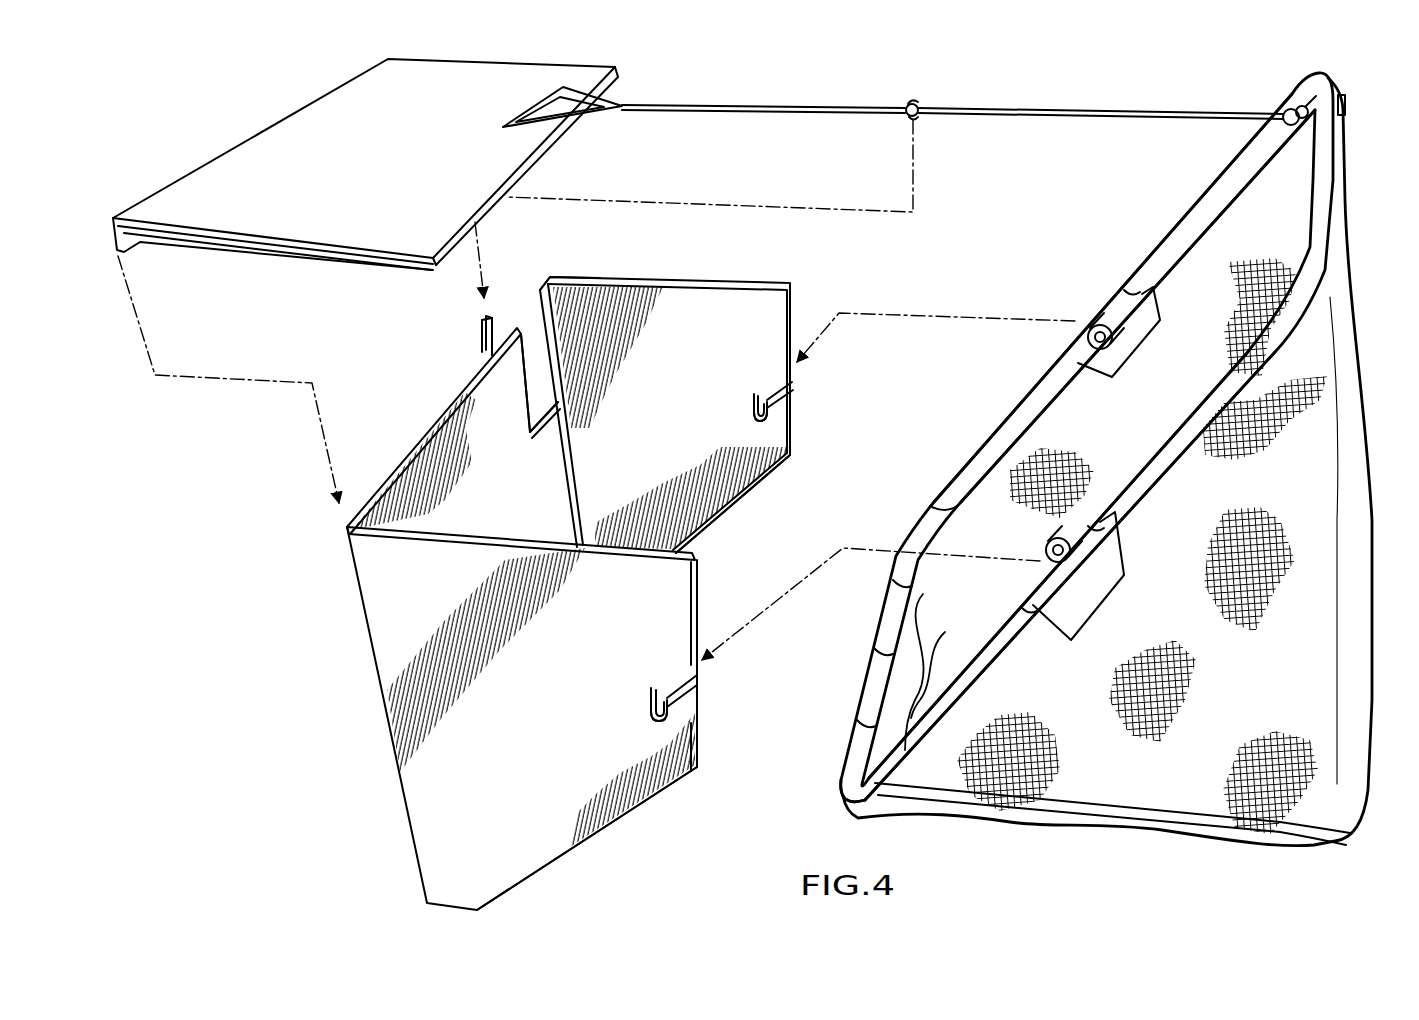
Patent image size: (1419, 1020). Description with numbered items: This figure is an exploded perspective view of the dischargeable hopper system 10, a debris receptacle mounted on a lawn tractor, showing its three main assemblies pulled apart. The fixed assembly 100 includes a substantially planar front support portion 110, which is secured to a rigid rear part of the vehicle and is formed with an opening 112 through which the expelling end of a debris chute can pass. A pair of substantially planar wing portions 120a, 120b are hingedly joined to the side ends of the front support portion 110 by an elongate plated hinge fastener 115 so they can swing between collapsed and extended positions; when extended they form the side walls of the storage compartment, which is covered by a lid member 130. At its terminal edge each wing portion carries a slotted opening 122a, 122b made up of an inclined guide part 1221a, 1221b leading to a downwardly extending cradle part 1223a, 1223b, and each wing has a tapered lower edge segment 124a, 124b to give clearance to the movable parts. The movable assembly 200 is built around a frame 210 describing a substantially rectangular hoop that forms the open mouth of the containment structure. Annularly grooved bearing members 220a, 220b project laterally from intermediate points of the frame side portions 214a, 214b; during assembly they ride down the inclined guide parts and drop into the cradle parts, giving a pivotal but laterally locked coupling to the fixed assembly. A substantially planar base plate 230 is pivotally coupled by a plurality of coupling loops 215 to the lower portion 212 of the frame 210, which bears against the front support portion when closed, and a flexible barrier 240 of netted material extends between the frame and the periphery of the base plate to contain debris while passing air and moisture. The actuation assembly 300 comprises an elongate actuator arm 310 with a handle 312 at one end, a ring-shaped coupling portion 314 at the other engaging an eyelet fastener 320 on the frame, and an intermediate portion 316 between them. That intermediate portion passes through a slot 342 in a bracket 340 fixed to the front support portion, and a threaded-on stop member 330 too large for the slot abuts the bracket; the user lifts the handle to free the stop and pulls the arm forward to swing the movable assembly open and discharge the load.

The dischargeable hopper system 10 is at (1413, 86).
The fixed assembly 100 is at (380, 798).
The front support portion 110 is at (533, 503).
The opening 112 is at (534, 318).
The hinge fastener 115 is at (565, 302).
The wing portion 120a is at (572, 849).
The wing portion 120b is at (765, 334).
The slotted opening 122a is at (659, 688).
The slotted opening 122b is at (755, 397).
The inclined guide part 1221a is at (692, 683).
The inclined guide part 1221b is at (791, 388).
The cradle part 1223a is at (669, 712).
The cradle part 1223b is at (769, 413).
The tapered lower edge segment 124a is at (645, 806).
The tapered lower edge segment 124b is at (742, 486).
The lid member 130 is at (406, 156).
The movable assembly 200 is at (1160, 852).
The frame 210 is at (1332, 166).
The lower portion of frame 212 is at (858, 790).
The side portion of frame 214a is at (1165, 470).
The side portion of frame 214b is at (1142, 240).
The coupling loops 215 is at (909, 591).
The bearing member 220a is at (1046, 562).
The bearing member 220b is at (1090, 334).
The base plate 230 is at (1068, 802).
The flexible barrier 240 is at (1318, 394).
The actuation assembly 300 is at (1168, 84).
The actuator arm 310 is at (1068, 118).
The handle 312 is at (530, 104).
The coupling portion 314 is at (1290, 130).
The intermediate portion 316 is at (841, 117).
The eyelet fastener 320 is at (1343, 101).
The stop member 330 is at (917, 120).
The bracket 340 is at (482, 348).
The slot 342 is at (481, 317).